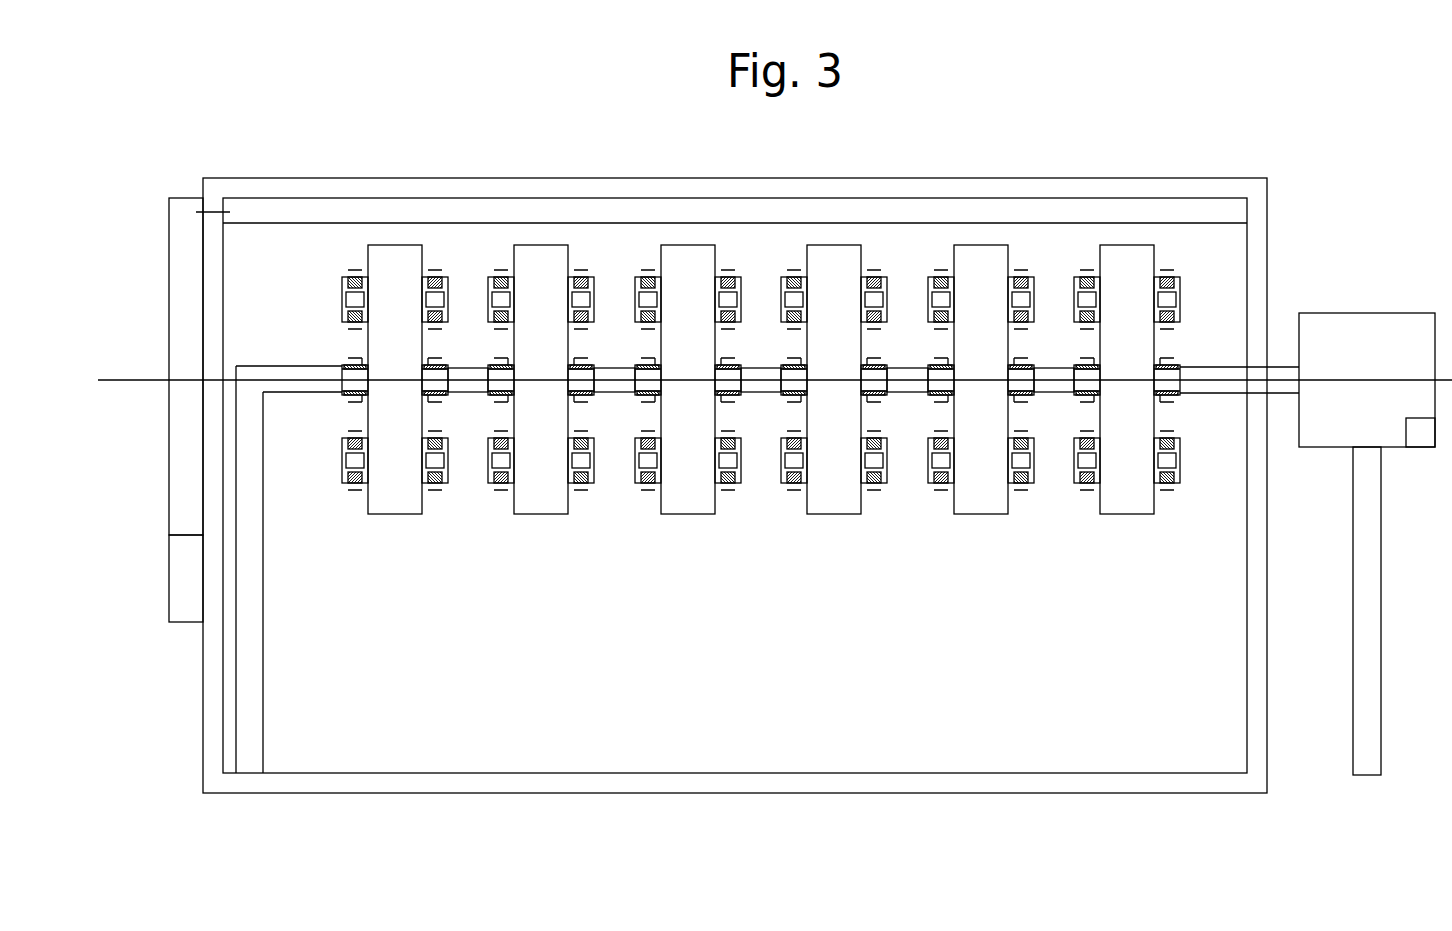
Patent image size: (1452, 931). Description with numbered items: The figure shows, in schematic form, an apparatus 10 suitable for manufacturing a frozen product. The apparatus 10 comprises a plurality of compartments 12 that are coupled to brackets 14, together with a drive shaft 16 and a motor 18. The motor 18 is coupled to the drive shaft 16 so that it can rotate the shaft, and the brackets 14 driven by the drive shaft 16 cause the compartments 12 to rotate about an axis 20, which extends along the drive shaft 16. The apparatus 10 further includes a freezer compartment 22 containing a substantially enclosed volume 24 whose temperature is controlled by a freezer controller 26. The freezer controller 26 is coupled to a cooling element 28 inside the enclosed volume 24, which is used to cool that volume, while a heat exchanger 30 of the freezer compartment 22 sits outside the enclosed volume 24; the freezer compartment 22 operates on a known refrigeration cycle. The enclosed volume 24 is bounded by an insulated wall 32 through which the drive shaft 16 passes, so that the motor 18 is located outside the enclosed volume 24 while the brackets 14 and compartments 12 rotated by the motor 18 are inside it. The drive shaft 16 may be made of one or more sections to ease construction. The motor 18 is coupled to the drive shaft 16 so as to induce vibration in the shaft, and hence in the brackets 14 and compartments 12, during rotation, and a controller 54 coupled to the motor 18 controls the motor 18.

The apparatus 10 is at (1300, 160).
The compartments 12 is at (487, 250).
The brackets 14 is at (388, 253).
The drive shaft 16 is at (612, 372).
The motor 18 is at (1382, 335).
The axis 20 is at (120, 382).
The freezer compartment 22 is at (905, 795).
The enclosed volume 24 is at (702, 738).
The freezer controller 26 is at (182, 582).
The cooling element 28 is at (273, 212).
The heat exchanger 30 is at (182, 252).
The insulated wall 32 is at (455, 785).
The controller 54 is at (1422, 438).